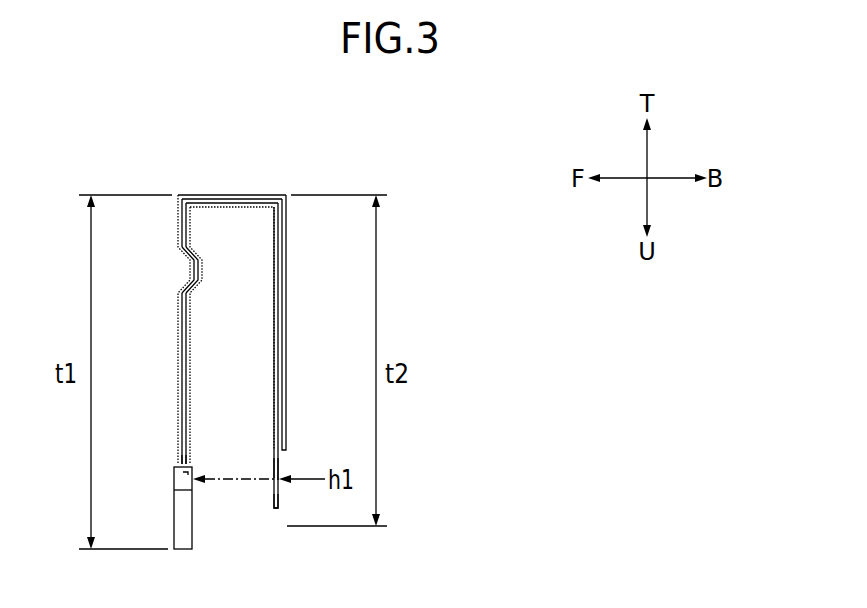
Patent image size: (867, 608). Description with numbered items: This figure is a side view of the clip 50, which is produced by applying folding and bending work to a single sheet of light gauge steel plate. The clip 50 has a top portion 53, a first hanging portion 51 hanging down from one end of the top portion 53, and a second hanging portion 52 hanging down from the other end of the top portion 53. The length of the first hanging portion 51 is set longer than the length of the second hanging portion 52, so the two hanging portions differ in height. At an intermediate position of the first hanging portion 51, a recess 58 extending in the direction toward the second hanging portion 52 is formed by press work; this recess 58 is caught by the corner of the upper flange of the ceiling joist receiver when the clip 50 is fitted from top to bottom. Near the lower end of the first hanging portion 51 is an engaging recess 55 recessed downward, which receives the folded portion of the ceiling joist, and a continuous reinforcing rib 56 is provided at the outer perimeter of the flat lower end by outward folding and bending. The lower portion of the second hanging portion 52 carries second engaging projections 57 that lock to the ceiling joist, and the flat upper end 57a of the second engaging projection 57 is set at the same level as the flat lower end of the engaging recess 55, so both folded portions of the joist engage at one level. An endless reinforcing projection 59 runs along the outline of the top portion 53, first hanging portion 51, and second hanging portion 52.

The clip 50 is at (233, 176).
The first hanging portion 51 is at (190, 350).
The second hanging portion 52 is at (277, 388).
The top portion 53 is at (238, 208).
The engaging recess 55 is at (178, 466).
The reinforcing rib 56 is at (182, 520).
The second engaging projection 57 is at (278, 497).
The flat upper end of second engaging projection 57a is at (278, 472).
The recess 58 is at (194, 280).
The reinforcing projection 59 is at (178, 227).